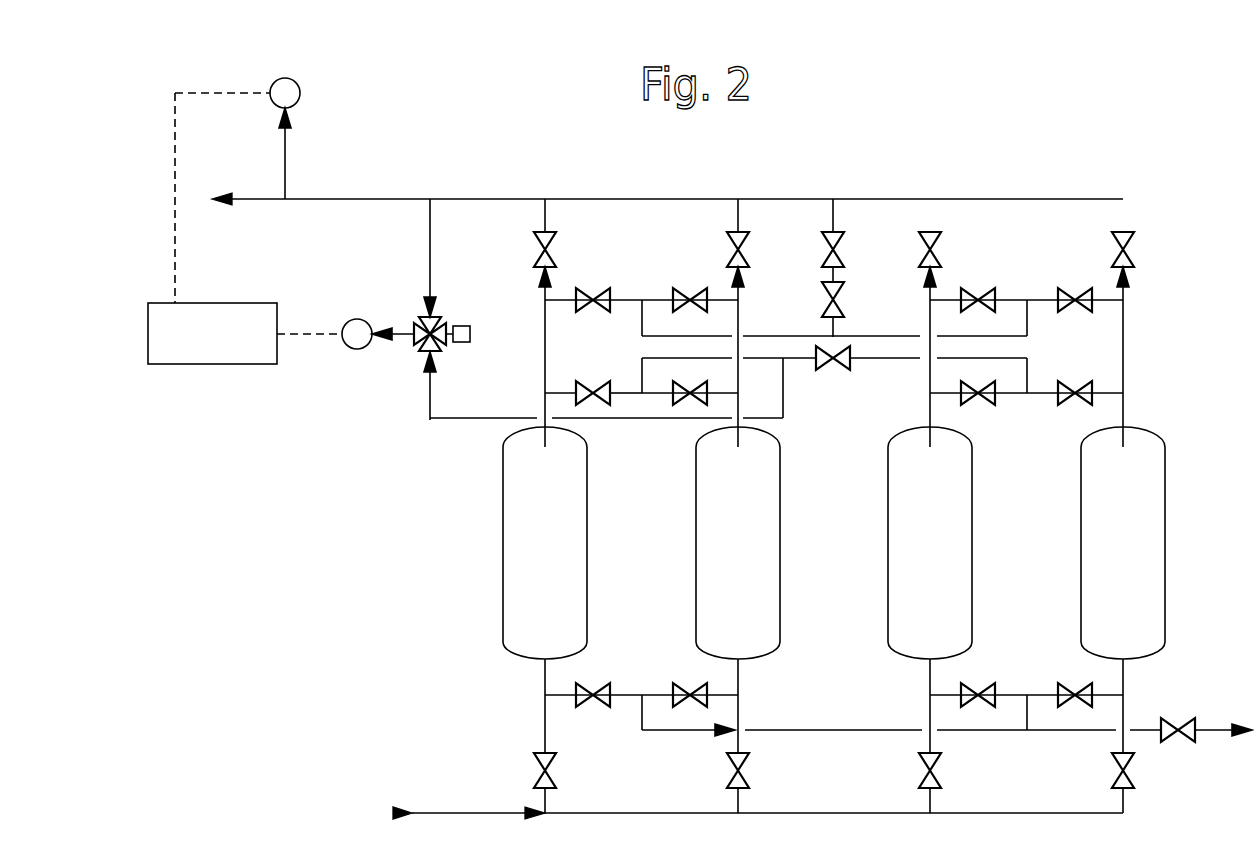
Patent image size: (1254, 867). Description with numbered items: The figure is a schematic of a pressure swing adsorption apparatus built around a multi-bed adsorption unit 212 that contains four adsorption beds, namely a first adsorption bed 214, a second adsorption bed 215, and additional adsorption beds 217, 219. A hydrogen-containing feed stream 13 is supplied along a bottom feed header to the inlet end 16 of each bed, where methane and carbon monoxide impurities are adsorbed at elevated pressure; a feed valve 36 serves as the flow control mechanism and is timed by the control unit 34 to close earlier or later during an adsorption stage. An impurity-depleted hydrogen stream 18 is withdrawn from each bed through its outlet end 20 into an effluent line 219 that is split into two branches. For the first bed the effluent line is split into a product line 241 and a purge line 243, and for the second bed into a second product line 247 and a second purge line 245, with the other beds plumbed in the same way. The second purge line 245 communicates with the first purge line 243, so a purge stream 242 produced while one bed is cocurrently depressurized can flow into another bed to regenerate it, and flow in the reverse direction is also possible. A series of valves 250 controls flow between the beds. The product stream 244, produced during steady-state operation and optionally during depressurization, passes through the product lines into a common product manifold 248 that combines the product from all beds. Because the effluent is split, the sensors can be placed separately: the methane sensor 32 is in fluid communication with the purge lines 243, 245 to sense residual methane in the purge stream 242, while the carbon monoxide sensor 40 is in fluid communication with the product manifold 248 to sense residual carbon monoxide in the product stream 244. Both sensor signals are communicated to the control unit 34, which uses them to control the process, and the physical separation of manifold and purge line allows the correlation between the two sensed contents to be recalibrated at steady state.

The hydrogen-containing feed stream 13 is at (460, 813).
The inlet end 16 is at (545, 672).
The impurity-depleted hydrogen stream 18 is at (545, 406).
The outlet end 20 is at (545, 433).
The methane sensor 32 is at (357, 319).
The control unit 34 is at (235, 291).
The feed valve 36 is at (549, 773).
The carbon monoxide sensor 40 is at (300, 93).
The multi-bed adsorption unit 212 is at (692, 543).
The first adsorption bed 214 is at (503, 584).
The second adsorption bed 215 is at (696, 584).
The additional adsorption bed 217 is at (888, 584).
The additional adsorption bed / effluent line 219 is at (752, 326).
The product line 241 is at (556, 218).
The purge stream 242 is at (559, 393).
The purge line 243 is at (622, 381).
The product stream 244 is at (545, 219).
The second purge line 245 is at (658, 407).
The second product line 247 is at (748, 219).
The product manifold 248 is at (640, 199).
The valves 250 is at (600, 289).